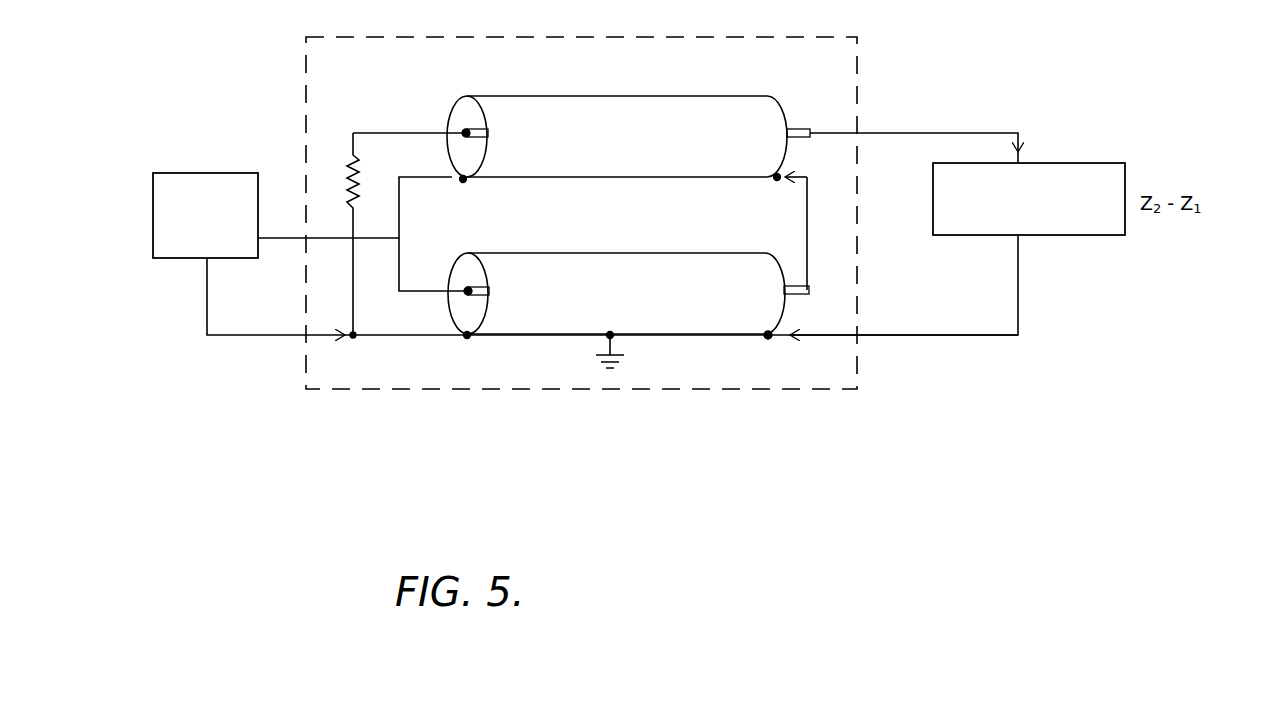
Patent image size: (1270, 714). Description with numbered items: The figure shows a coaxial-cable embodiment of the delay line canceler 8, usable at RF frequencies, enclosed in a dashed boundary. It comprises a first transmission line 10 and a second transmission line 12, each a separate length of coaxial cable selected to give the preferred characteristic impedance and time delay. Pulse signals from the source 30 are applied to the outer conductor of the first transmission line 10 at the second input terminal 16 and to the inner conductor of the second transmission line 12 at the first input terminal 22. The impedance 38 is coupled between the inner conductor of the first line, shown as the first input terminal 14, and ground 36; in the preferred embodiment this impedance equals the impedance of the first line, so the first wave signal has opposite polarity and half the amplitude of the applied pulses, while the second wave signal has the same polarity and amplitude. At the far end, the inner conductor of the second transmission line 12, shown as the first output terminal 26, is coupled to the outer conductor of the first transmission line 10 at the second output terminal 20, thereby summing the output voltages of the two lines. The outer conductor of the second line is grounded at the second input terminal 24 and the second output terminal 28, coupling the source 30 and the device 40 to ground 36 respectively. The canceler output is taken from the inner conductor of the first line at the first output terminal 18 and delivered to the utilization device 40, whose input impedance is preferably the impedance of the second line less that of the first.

The delay line canceler 8 is at (652, 389).
The first transmission line 10 is at (590, 96).
The second transmission line 12 is at (590, 253).
The first input terminal 14 is at (466, 130).
The second input terminal 16 is at (463, 181).
The first output terminal 18 is at (832, 100).
The second output terminal 20 is at (775, 179).
The first input terminal 22 is at (468, 293).
The second input terminal 24 is at (467, 338).
The first output terminal 26 is at (808, 294).
The second output terminal 28 is at (770, 338).
The source 30 is at (190, 173).
The ground 36 is at (608, 342).
The impedance 38 is at (358, 163).
The device 40 is at (1065, 163).